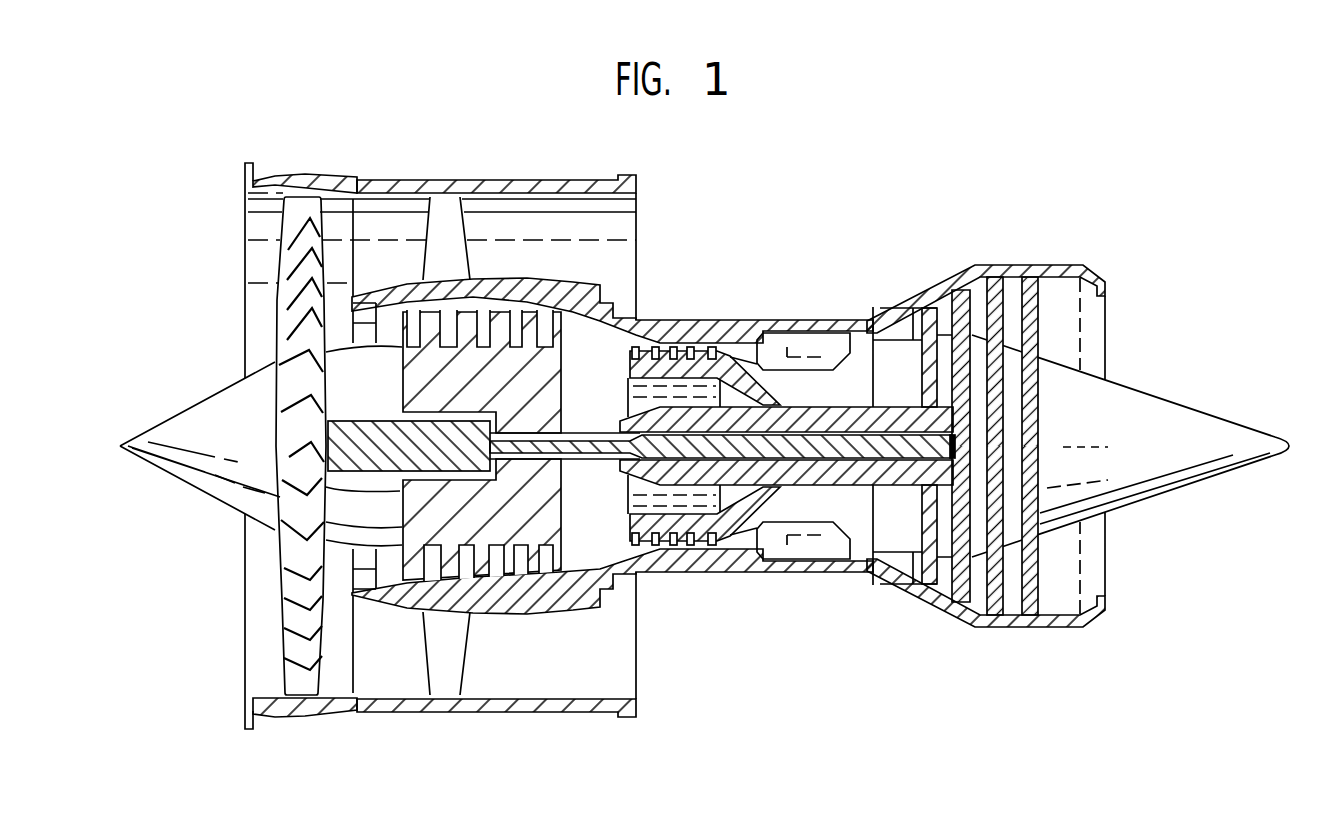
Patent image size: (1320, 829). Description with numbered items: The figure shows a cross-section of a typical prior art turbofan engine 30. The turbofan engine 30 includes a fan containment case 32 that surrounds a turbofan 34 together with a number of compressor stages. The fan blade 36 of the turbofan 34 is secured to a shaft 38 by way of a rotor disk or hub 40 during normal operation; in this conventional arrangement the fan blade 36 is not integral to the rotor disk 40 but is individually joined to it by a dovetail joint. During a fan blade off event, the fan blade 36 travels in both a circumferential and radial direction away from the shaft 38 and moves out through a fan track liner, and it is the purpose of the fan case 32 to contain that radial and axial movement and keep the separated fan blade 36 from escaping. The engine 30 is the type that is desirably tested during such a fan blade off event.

The turbofan engine 30 is at (704, 408).
The fan containment case 32 is at (289, 180).
The turbofan 34 is at (282, 241).
The fan blade 36 is at (307, 367).
The shaft 38 is at (364, 470).
The rotor disk 40 is at (268, 548).